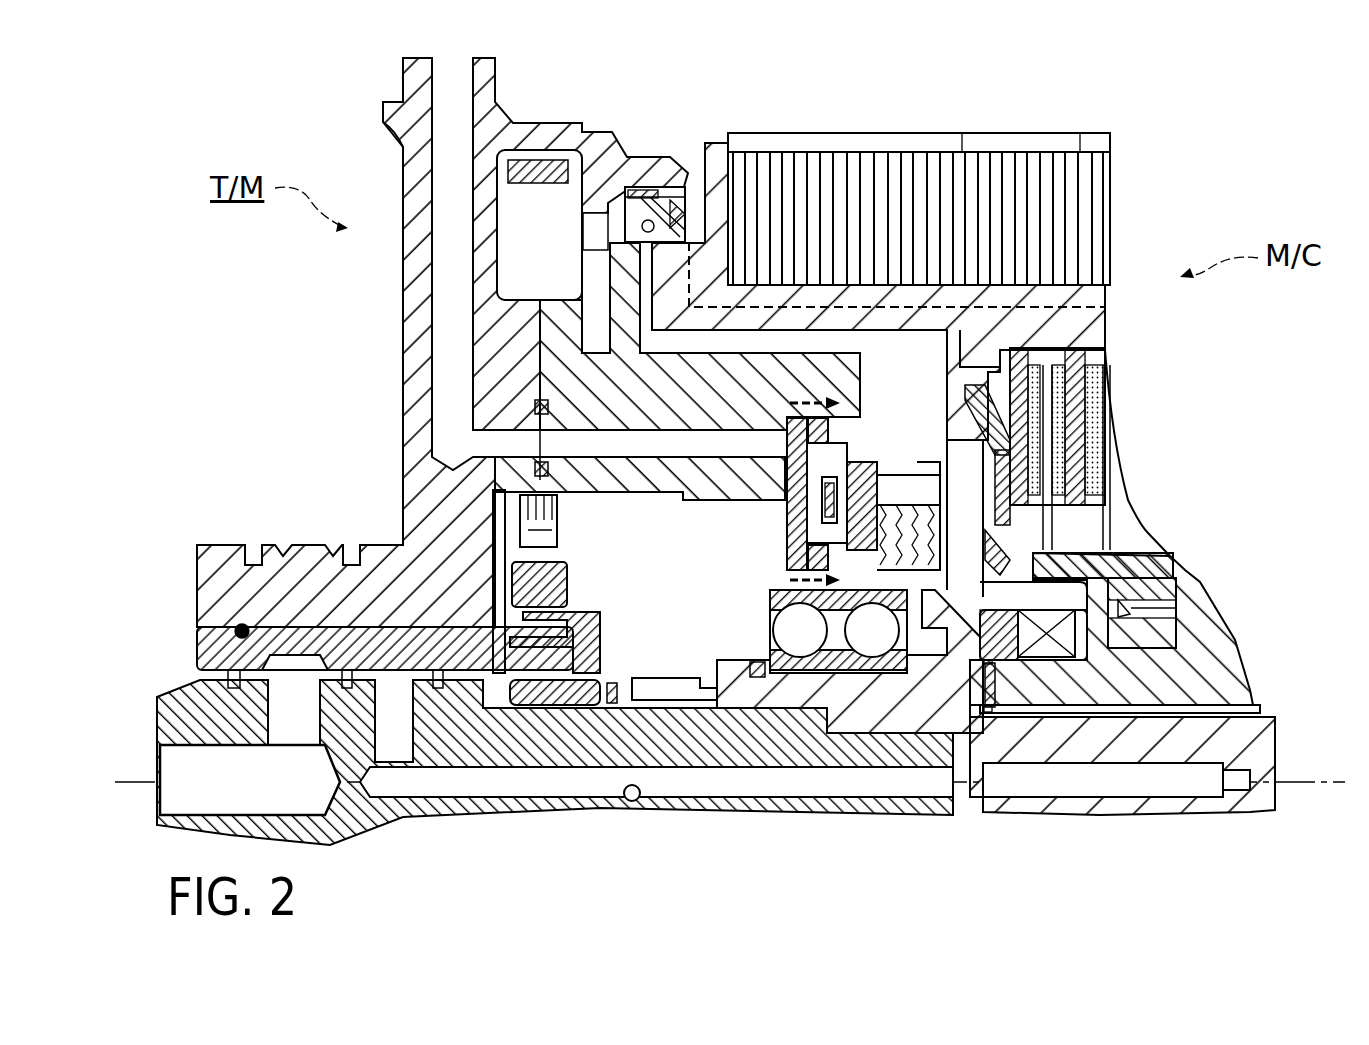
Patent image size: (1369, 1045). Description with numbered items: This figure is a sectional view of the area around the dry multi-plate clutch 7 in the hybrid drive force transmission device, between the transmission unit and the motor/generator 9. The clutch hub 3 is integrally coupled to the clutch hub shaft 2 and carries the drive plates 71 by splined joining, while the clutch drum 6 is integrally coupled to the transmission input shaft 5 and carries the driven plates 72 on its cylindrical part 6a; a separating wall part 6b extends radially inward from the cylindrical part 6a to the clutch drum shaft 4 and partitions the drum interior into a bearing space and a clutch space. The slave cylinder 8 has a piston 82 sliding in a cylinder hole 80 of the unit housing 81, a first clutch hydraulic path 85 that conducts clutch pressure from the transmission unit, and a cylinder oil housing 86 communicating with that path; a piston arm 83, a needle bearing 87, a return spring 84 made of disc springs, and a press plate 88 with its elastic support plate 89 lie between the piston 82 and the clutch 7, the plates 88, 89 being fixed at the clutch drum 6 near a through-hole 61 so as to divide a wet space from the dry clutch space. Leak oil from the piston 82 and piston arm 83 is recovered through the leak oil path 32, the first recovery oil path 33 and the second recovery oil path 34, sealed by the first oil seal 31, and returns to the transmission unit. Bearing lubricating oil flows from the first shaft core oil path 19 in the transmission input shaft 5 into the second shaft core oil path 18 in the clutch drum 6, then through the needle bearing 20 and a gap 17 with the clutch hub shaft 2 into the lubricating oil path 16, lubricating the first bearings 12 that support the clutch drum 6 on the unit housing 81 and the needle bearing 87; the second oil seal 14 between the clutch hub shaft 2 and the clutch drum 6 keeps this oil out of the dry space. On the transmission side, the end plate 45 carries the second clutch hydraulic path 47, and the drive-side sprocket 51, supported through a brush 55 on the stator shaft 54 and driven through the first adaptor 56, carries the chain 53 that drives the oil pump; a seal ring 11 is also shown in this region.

The clutch hub shaft 2 is at (1152, 683).
The clutch hub 3 is at (1108, 628).
The clutch drum shaft 4 is at (912, 697).
The transmission input shaft 5 is at (697, 812).
The clutch drum 6 is at (1105, 322).
The cylindrical part 6a is at (1055, 340).
The separating wall part 6b is at (1143, 597).
The dry multi-plate clutch 7 is at (1112, 400).
The slave cylinder 8 is at (675, 512).
The motor/generator 9 is at (1108, 210).
The seal ring 11 is at (540, 407).
The first bearing 12 is at (765, 598).
The second oil seal 14 is at (1067, 637).
The lubricating oil path 16 is at (1010, 690).
The gap 17 is at (1155, 710).
The second shaft core oil path 18 is at (1165, 782).
The first shaft core oil path 19 is at (645, 805).
The needle bearing 20 is at (965, 720).
The first oil seal 31 is at (655, 185).
The leak oil path 32 is at (953, 408).
The first recovery oil path 33 is at (727, 352).
The second recovery oil path 34 is at (580, 243).
The end plate 45 is at (428, 285).
The second clutch hydraulic path 47 is at (437, 180).
The drive-side sprocket 51 is at (538, 582).
The chain 53 is at (493, 495).
The stator shaft 54 is at (330, 657).
The brush 55 is at (533, 638).
The first adaptor 56 is at (548, 683).
The through-hole 61 is at (1015, 488).
The drive plates 71 is at (1120, 530).
The driven plates 72 is at (1070, 378).
The cylinder hole 80 is at (822, 425).
The unit housing 81 is at (627, 388).
The piston 82 is at (797, 480).
The piston arm 83 is at (862, 465).
The return spring 84 is at (1000, 520).
The first clutch hydraulic path 85 is at (660, 447).
The cylinder oil housing 86 is at (800, 552).
The needle bearing 87 is at (828, 500).
The press plate 88 is at (915, 522).
The elastic support plate 89 is at (1023, 545).